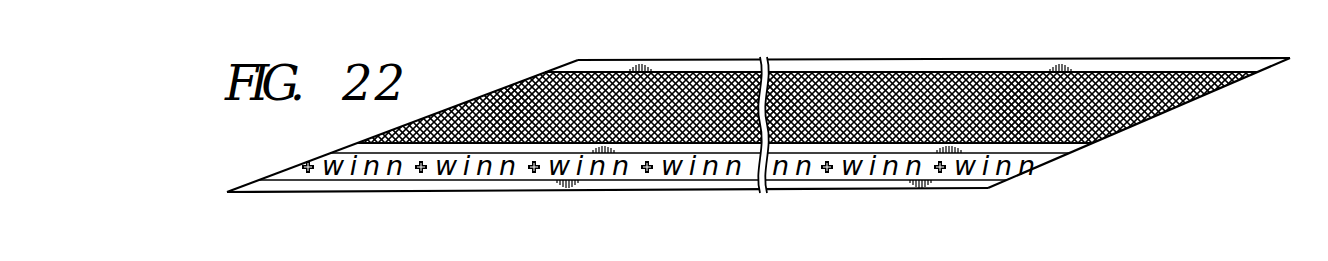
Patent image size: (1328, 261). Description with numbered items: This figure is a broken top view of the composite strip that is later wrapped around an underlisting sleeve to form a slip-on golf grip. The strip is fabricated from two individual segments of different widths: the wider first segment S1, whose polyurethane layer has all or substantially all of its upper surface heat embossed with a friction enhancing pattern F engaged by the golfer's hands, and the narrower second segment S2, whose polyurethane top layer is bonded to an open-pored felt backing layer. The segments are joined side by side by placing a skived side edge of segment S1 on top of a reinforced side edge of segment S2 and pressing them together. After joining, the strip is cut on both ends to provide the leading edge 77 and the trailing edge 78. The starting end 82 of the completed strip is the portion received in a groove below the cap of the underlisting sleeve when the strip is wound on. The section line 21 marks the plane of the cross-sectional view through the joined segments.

The leading edge 77 is at (521, 82).
The trailing edge 78 is at (1218, 89).
The starting end 82 is at (256, 186).
The first segment S1 is at (945, 59).
The second segment S2 is at (1041, 162).
The friction enhancing pattern F is at (1137, 109).
The section line 21- 21 is at (835, 59).